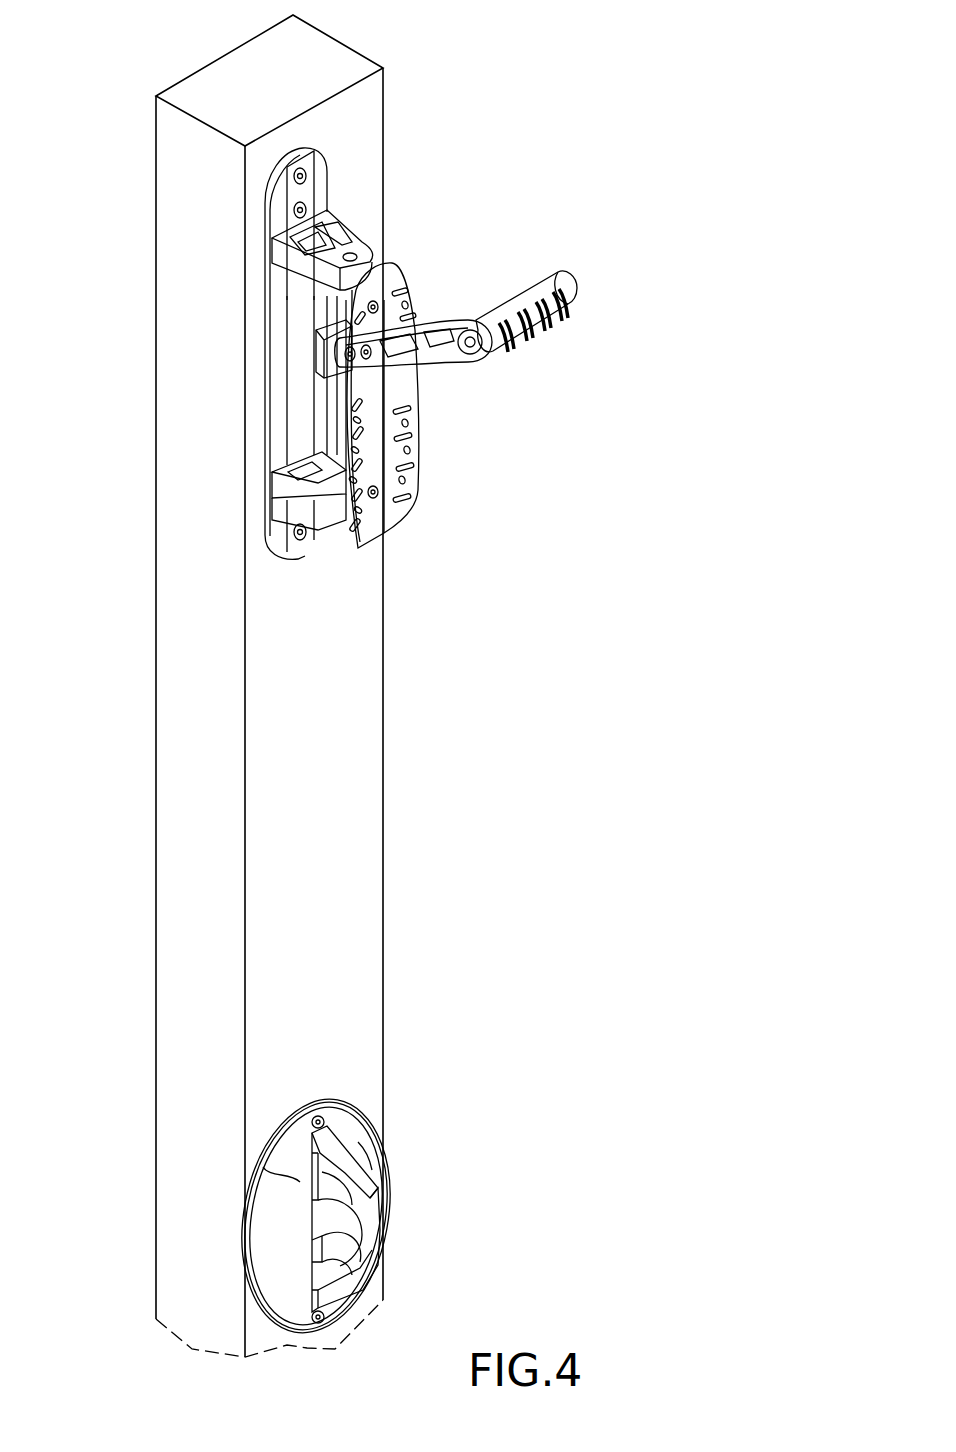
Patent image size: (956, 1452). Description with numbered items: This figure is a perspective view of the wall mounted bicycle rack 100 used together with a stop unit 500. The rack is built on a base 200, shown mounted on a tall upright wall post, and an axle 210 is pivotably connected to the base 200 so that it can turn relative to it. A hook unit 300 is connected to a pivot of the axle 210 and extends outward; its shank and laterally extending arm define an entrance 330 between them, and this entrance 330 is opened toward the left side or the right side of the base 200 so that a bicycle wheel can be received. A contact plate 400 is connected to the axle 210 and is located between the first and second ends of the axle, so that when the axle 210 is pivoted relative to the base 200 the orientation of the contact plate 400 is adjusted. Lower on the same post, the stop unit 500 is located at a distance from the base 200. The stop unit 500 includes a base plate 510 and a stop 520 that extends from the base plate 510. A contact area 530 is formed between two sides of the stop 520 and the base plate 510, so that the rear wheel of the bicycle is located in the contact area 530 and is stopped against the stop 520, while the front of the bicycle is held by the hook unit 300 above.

The wall mounted bicycle rack 100 is at (540, 431).
The base 200 is at (263, 316).
The axle 210 is at (345, 432).
The hook unit 300 is at (566, 329).
The entrance 330 is at (490, 276).
The contact plate 400 is at (420, 497).
The stop unit 500 is at (406, 1190).
The base plate 510 is at (263, 1167).
The stop 520 is at (374, 1227).
The contact area 530 is at (358, 1142).